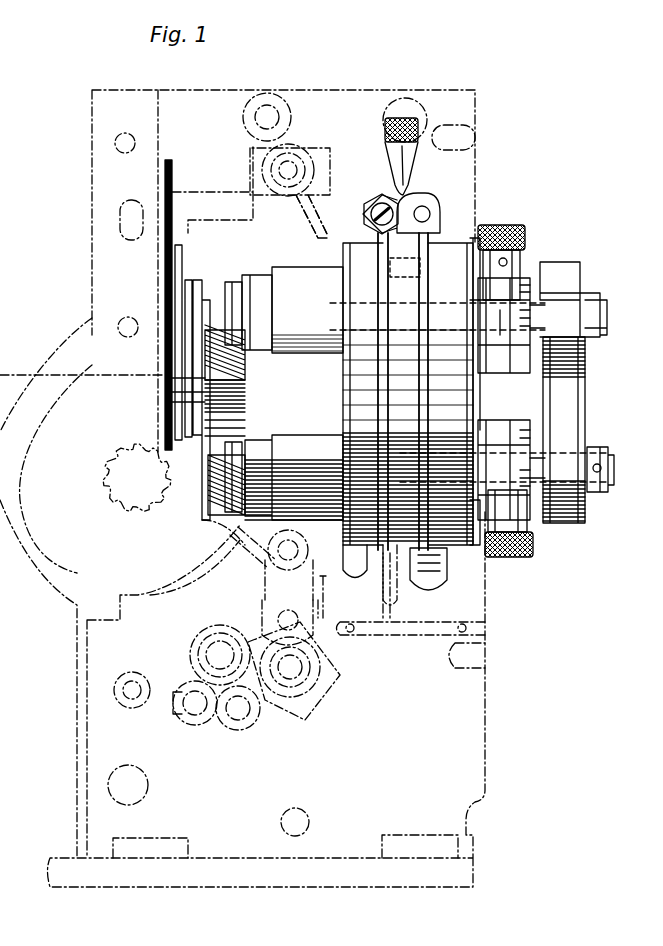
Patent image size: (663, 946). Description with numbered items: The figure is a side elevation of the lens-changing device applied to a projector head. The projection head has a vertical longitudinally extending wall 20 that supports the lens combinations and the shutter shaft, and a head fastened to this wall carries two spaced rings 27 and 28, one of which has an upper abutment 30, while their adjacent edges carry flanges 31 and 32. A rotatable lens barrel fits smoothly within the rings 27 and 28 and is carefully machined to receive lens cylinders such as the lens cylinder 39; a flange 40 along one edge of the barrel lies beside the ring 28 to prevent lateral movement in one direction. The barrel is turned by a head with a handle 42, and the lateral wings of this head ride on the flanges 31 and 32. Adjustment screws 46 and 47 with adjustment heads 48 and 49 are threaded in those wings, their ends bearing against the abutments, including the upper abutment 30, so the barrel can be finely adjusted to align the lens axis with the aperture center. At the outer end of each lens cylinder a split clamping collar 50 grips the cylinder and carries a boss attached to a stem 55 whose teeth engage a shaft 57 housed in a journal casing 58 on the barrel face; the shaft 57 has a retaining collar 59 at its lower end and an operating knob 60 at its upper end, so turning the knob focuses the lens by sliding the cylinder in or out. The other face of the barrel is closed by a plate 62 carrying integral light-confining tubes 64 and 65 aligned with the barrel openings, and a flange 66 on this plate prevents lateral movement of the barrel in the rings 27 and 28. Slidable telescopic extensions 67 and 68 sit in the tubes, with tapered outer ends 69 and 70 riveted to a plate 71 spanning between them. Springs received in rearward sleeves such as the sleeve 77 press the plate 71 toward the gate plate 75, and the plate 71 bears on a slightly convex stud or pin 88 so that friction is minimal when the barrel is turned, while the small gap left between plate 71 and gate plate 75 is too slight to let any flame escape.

The vertical longitudinally extending wall 20 is at (332, 90).
The ring 27 is at (352, 536).
The ring 28 is at (432, 586).
The upper abutment 30 is at (427, 581).
The flange 31 is at (380, 263).
The flange 32 is at (426, 237).
The lens cylinder 39 is at (181, 272).
The flange 40 is at (473, 242).
The handle 42 is at (437, 152).
The adjustment screw 46 is at (380, 210).
The adjustment screw 47 is at (440, 210).
The adjustment head 48 is at (419, 208).
The adjustment head 49 is at (369, 210).
The clamping collar 50 is at (559, 272).
The stem 55 is at (622, 430).
The shaft 57 is at (505, 412).
The journal casing 58 is at (507, 557).
The retaining collar 59 is at (487, 352).
The operating knob 60 is at (548, 207).
The plate 62 is at (343, 300).
The light-confining tube 64 is at (297, 219).
The light-confining tube 65 is at (260, 563).
The flange 66 is at (342, 536).
The telescopic extension 67 is at (293, 248).
The telescopic extension 68 is at (220, 554).
The tapered outer end 69 is at (215, 280).
The tapered outer end 70 is at (232, 516).
The plate 71 is at (207, 284).
The gate plate 75 is at (172, 222).
The sleeve 77 is at (168, 375).
The stud or pin 88 is at (212, 394).